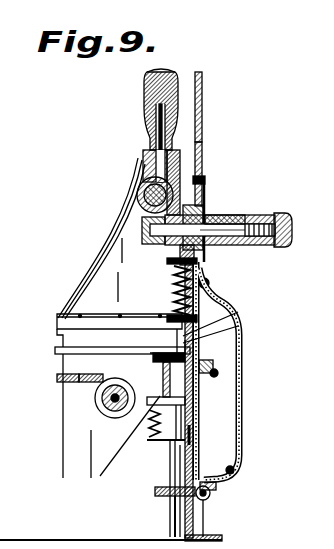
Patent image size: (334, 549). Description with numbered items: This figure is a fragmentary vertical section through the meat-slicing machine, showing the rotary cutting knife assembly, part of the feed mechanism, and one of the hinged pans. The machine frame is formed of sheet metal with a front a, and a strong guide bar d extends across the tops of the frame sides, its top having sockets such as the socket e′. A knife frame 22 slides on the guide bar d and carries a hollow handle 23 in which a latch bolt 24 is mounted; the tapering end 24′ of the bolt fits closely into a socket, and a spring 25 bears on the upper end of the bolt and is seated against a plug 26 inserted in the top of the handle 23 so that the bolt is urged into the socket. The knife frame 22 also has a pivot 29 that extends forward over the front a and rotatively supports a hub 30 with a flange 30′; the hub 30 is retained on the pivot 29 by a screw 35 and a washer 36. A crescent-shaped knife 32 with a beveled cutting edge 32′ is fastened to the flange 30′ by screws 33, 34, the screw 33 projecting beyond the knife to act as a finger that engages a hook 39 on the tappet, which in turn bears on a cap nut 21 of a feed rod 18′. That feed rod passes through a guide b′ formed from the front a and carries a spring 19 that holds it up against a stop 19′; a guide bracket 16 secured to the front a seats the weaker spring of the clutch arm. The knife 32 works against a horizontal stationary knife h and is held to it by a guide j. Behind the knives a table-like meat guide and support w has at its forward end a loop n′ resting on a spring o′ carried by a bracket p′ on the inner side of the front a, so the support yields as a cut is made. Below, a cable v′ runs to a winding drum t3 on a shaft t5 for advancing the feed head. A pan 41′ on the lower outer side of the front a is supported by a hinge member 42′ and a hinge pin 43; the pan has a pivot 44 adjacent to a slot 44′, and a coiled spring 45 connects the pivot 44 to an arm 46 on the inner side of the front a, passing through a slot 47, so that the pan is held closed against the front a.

The spring 25 is at (148, 100).
The plug 26 is at (160, 76).
The hollow handle 23 is at (158, 128).
The latch bolt 24 is at (150, 152).
The tapering end 24′ is at (138, 178).
The socket e′ is at (138, 192).
The guide bar d is at (140, 210).
The knife frame 22 is at (144, 222).
The beveled cutting edge 32′ is at (202, 80).
The knife 32 is at (203, 152).
The hook 39 is at (203, 178).
The screw 33 is at (203, 196).
The flange 30′ is at (210, 210).
The hub 30 is at (257, 247).
The pivot 29 is at (236, 246).
The screw 35 is at (268, 247).
The washer 36 is at (291, 238).
The screw 34 is at (210, 287).
The pan 41′ is at (243, 395).
The stop 19′ is at (238, 312).
The feed rod 18′ is at (238, 326).
The cap nut 21 is at (168, 264).
The spring 19 is at (173, 298).
The guide b′ is at (172, 320).
The meat guide and support w is at (60, 347).
The loop n′ is at (176, 352).
The cable v′ is at (72, 377).
The shaft t5 is at (112, 378).
The winding drum t3 is at (95, 400).
The spring o′ is at (160, 381).
The horizontal stationary knife h is at (205, 359).
The guide j is at (217, 373).
The bracket p′ is at (126, 452).
The guide bracket 16 is at (168, 449).
The front a is at (194, 439).
The slot 44′ is at (198, 470).
The pivot 44 is at (248, 464).
The hinge pin 43 is at (216, 486).
The hinge member 42′ is at (211, 496).
The arm 46 is at (170, 495).
The coiled spring 45 is at (178, 504).
The slot 47 is at (205, 508).